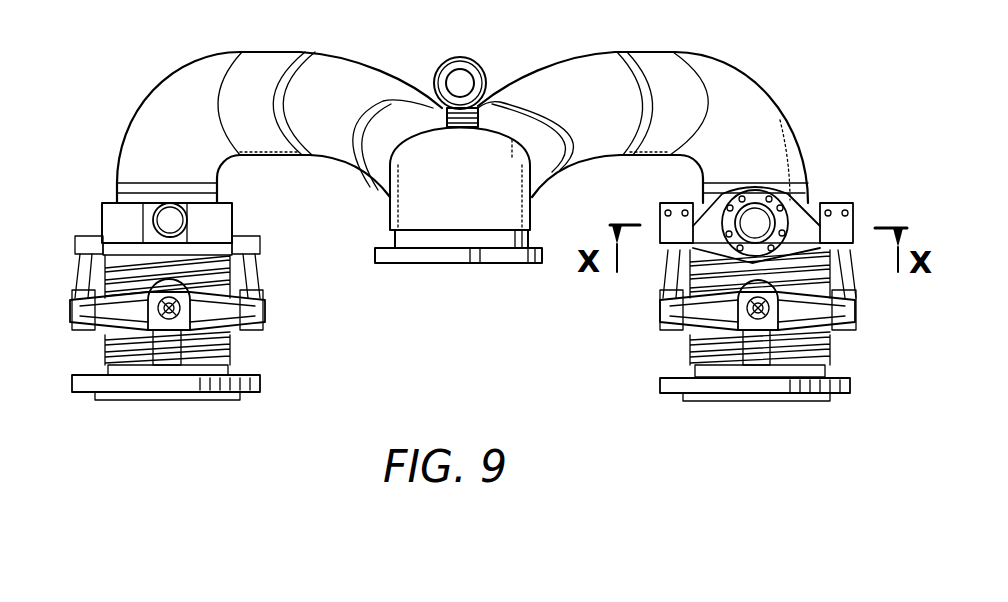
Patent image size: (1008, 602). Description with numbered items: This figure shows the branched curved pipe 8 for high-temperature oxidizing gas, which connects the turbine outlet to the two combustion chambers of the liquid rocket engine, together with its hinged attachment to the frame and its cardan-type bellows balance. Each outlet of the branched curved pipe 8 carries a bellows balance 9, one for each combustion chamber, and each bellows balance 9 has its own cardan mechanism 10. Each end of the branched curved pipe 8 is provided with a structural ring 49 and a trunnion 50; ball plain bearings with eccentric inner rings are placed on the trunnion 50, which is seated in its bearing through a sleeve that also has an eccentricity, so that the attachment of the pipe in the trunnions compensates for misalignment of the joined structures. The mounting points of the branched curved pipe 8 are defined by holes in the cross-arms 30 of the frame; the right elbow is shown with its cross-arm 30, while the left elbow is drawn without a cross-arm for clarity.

The branched curved pipe 8 is at (657, 62).
The bellows balance 9 is at (130, 335).
The cardan mechanism 10 is at (222, 310).
The cross-arm 30 is at (805, 222).
The structural ring 49 is at (110, 208).
The trunnion 50 is at (172, 212).